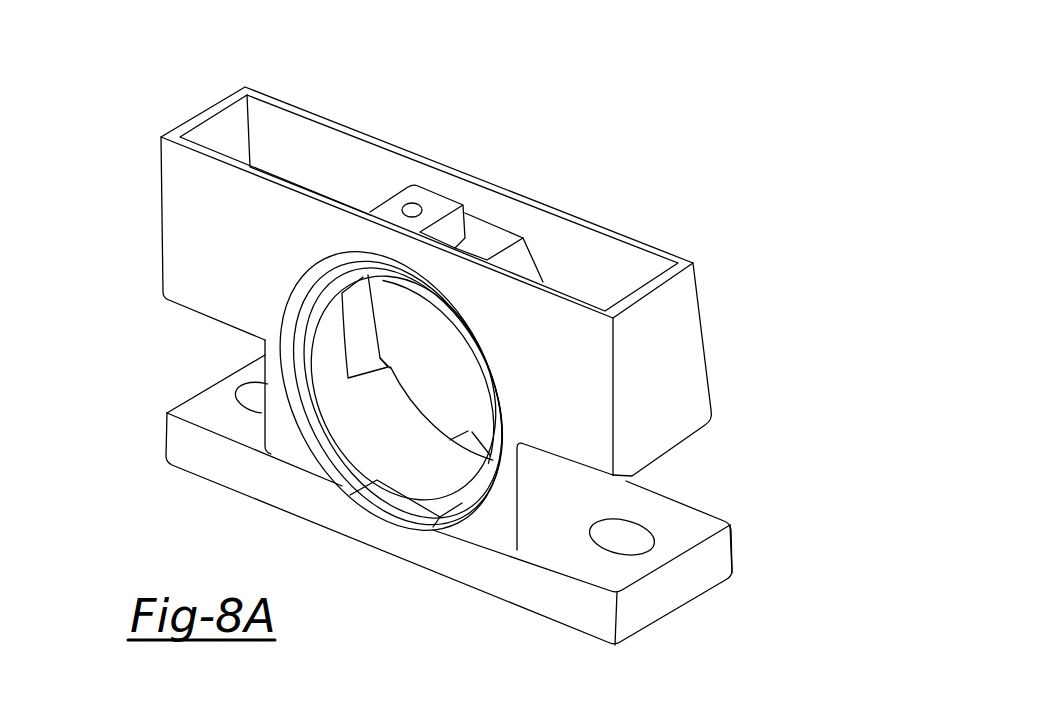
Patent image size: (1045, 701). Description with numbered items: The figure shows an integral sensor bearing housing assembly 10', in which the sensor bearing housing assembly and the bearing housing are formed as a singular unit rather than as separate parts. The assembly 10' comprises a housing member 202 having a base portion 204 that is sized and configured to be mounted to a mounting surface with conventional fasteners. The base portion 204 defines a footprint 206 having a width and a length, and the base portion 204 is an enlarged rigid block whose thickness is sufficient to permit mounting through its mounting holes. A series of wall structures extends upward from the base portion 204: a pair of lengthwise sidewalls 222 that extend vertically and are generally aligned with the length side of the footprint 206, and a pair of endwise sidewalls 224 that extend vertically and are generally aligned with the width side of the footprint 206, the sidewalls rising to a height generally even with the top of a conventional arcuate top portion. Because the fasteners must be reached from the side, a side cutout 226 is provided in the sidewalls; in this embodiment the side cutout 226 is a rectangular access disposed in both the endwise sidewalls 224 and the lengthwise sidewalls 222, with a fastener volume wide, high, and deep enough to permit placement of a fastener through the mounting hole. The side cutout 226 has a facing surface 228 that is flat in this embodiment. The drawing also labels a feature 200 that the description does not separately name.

The integral sensor bearing housing assembly 10' is at (627, 107).
The base 200 is at (573, 617).
The housing member 202 is at (703, 333).
The base portion 204 is at (735, 552).
The footprint 206 is at (673, 617).
The lengthwise sidewalls 222 is at (331, 112).
The endwise sidewalls 224 is at (201, 105).
The side cutout 226 is at (697, 462).
The facing surface 228 is at (533, 497).